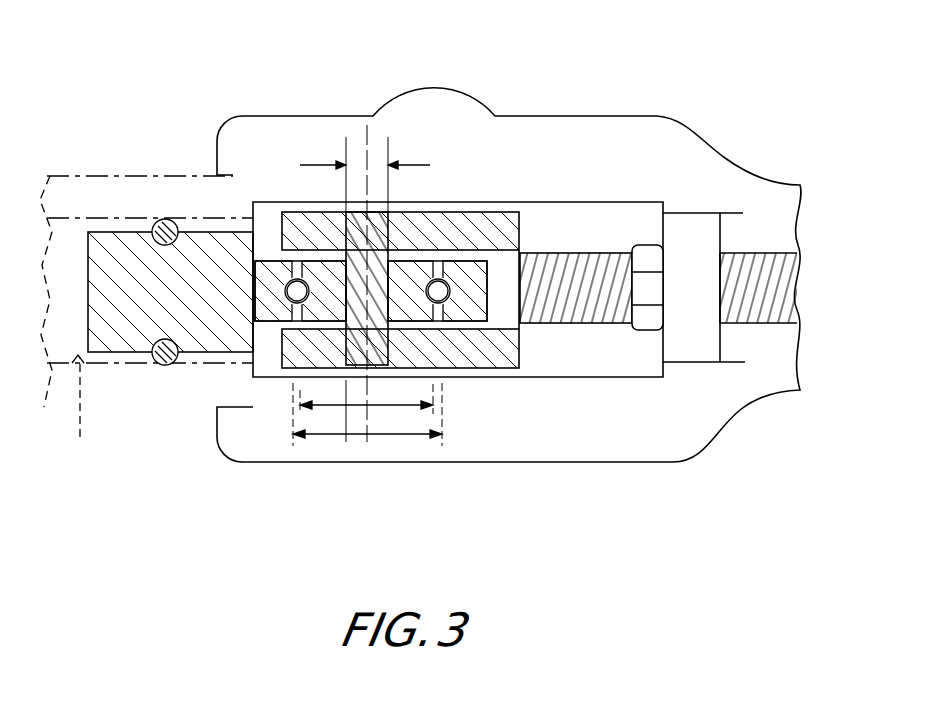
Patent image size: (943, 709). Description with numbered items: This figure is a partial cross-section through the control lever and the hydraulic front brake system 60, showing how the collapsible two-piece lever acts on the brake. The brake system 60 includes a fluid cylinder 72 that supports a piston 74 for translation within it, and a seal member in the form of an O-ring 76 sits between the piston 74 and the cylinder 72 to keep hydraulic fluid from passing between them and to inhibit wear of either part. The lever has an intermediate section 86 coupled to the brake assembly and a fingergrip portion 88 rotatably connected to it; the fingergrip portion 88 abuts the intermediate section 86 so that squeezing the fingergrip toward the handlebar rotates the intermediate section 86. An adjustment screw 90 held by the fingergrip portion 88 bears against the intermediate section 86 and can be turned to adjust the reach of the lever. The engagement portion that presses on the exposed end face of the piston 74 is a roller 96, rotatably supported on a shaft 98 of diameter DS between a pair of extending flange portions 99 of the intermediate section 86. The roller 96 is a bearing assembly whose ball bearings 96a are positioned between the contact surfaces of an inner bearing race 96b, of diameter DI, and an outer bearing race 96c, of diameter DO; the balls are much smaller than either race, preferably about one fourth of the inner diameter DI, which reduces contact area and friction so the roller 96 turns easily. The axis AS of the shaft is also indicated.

The hydraulic front brake system 60 is at (143, 385).
The fluid cylinder 72 is at (74, 410).
The piston 74 is at (200, 232).
The O-ring 76 is at (160, 220).
The intermediate section 86 is at (522, 335).
The fingergrip portion 88 is at (562, 116).
The adjustment screw 90 is at (790, 290).
The roller 96 is at (423, 307).
The ball bearings 96a is at (293, 280).
The inner bearing race 96b is at (330, 321).
The outer bearing race 96c is at (272, 323).
The shaft 98 is at (355, 212).
The extending flange portions 99 is at (520, 218).
The disc axis AS is at (367, 140).
The diameter of the shaft DS is at (412, 165).
The diameter of the inner bearing race contact surface DI is at (380, 405).
The diameter of the outer bearing race contact surface DO is at (407, 436).